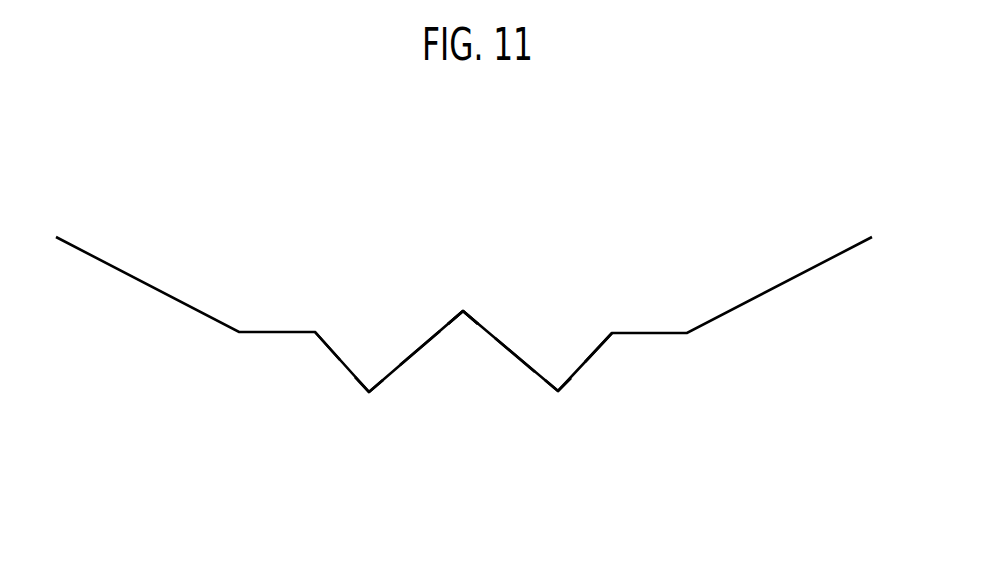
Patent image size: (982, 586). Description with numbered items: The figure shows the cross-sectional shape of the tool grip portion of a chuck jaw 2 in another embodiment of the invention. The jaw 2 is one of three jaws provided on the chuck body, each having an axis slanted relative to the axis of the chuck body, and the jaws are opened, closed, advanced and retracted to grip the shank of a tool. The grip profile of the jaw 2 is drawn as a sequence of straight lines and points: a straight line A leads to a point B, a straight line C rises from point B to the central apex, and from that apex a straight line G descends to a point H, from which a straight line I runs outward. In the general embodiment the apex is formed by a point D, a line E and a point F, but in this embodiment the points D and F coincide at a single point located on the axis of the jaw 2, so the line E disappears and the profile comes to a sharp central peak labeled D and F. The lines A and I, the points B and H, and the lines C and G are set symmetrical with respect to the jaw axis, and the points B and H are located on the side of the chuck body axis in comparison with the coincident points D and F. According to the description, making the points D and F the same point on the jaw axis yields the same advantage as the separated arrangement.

The jaw 2 is at (778, 285).
The line A is at (328, 350).
The point B is at (368, 395).
The line C is at (420, 345).
The point D is at (463, 310).
The point F is at (463, 317).
The line G is at (513, 348).
The point H is at (558, 392).
The line I is at (595, 353).